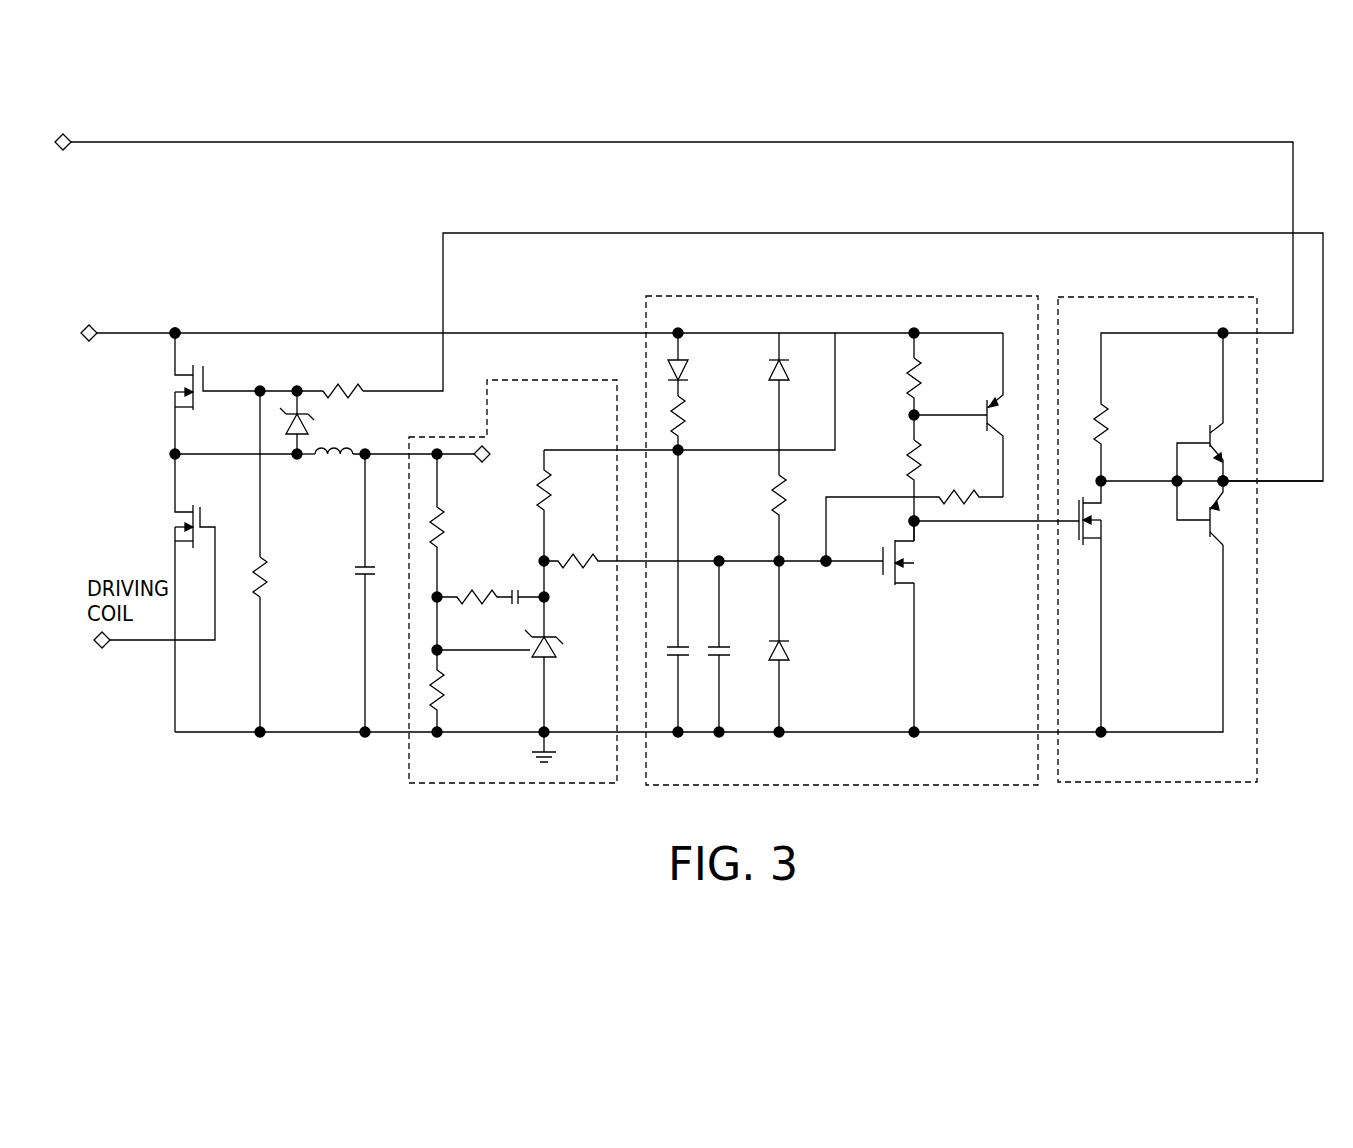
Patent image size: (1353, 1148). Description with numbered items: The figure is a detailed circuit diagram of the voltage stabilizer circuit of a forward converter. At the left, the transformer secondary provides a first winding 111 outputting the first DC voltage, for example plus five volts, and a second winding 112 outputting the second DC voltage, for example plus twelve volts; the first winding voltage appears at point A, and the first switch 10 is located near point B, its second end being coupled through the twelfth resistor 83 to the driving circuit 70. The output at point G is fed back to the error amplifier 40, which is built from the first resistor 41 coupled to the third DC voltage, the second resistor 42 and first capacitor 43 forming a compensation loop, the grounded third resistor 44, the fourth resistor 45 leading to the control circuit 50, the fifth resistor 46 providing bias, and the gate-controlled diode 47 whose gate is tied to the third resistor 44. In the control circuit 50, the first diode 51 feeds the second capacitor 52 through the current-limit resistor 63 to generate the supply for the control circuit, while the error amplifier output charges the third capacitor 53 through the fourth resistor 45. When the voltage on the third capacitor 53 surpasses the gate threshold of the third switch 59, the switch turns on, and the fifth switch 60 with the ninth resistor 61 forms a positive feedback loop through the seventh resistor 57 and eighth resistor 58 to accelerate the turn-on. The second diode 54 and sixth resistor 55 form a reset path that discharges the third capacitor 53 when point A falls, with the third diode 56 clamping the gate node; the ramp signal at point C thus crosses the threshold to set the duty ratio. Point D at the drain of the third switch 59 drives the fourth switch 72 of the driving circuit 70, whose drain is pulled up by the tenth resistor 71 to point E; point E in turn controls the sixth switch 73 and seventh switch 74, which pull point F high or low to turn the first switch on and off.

The second winding 112 is at (190, 103).
The first winding 111 is at (128, 298).
The point A is at (182, 310).
The first switch 10 is at (200, 343).
The twelfth resistor 83 is at (344, 388).
The point B is at (170, 448).
The point G is at (424, 463).
The error amplifier 40 is at (520, 380).
The first resistor 41 is at (441, 513).
The second resistor 42 is at (464, 592).
The first capacitor 43 is at (512, 588).
The third resistor 44 is at (440, 689).
The fourth resistor 45 is at (576, 556).
The fifth resistor 46 is at (550, 487).
The gate-controlled diode 47 is at (561, 634).
The control circuit 50 is at (873, 296).
The first diode 51 is at (690, 370).
The current-limit resistor 63 is at (689, 419).
The second capacitor 52 is at (685, 640).
The third capacitor 53 is at (731, 640).
The second diode 54 is at (786, 368).
The sixth resistor 55 is at (784, 483).
The third diode 56 is at (788, 641).
The seventh resistor 57 is at (920, 384).
The eighth resistor 58 is at (920, 475).
The third switch 59 is at (920, 560).
The fifth switch 60 is at (1006, 402).
The ninth resistor 61 is at (992, 495).
The point C is at (836, 580).
The point D is at (978, 537).
The driving circuit 70 is at (1156, 297).
The tenth resistor 71 is at (1105, 425).
The fourth switch 72 is at (1109, 513).
The sixth switch 73 is at (1217, 443).
The seventh switch 74 is at (1228, 517).
The point E is at (1121, 472).
The point F is at (1273, 472).